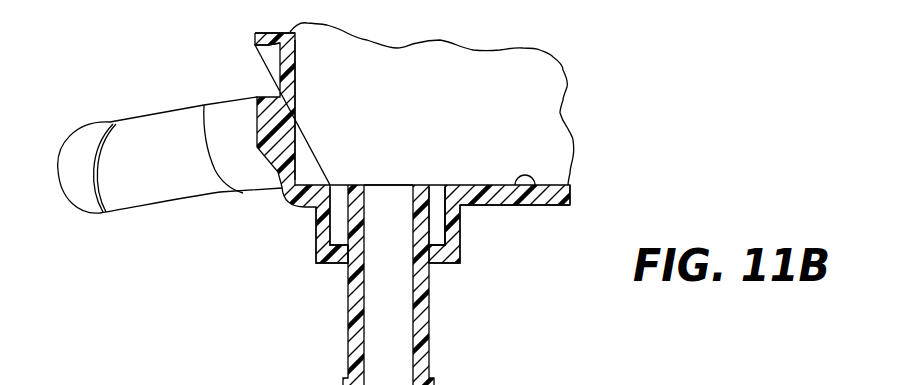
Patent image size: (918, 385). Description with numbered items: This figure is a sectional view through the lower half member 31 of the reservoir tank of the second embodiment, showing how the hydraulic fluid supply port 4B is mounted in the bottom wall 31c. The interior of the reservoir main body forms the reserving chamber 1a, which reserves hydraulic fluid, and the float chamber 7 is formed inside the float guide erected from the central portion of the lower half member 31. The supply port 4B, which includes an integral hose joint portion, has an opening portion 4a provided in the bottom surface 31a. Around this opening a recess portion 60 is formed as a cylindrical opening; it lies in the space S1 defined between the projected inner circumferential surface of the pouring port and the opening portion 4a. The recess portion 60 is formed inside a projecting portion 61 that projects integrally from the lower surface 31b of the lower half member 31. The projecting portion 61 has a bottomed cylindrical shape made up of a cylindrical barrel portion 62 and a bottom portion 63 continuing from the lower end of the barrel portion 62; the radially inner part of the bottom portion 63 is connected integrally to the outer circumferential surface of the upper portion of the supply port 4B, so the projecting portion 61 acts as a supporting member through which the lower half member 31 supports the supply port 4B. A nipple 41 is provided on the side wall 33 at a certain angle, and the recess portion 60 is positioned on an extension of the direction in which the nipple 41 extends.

The lower half member 31 is at (562, 129).
The bottom surface 31a is at (501, 206).
The lower surface 31b is at (528, 188).
The bottom wall 31c is at (568, 192).
The side wall 33 is at (278, 62).
The float chamber 7 is at (440, 12).
The space S1 is at (188, 9).
The reserving chamber 1a is at (357, 67).
The nipple 41 is at (150, 128).
The hydraulic fluid supply port 4B is at (327, 333).
The opening portion 4a is at (380, 176).
The recess portion 60 is at (446, 172).
The projecting portion 61 is at (303, 268).
The barrel portion 62 is at (462, 224).
The bottom portion 63 is at (448, 262).